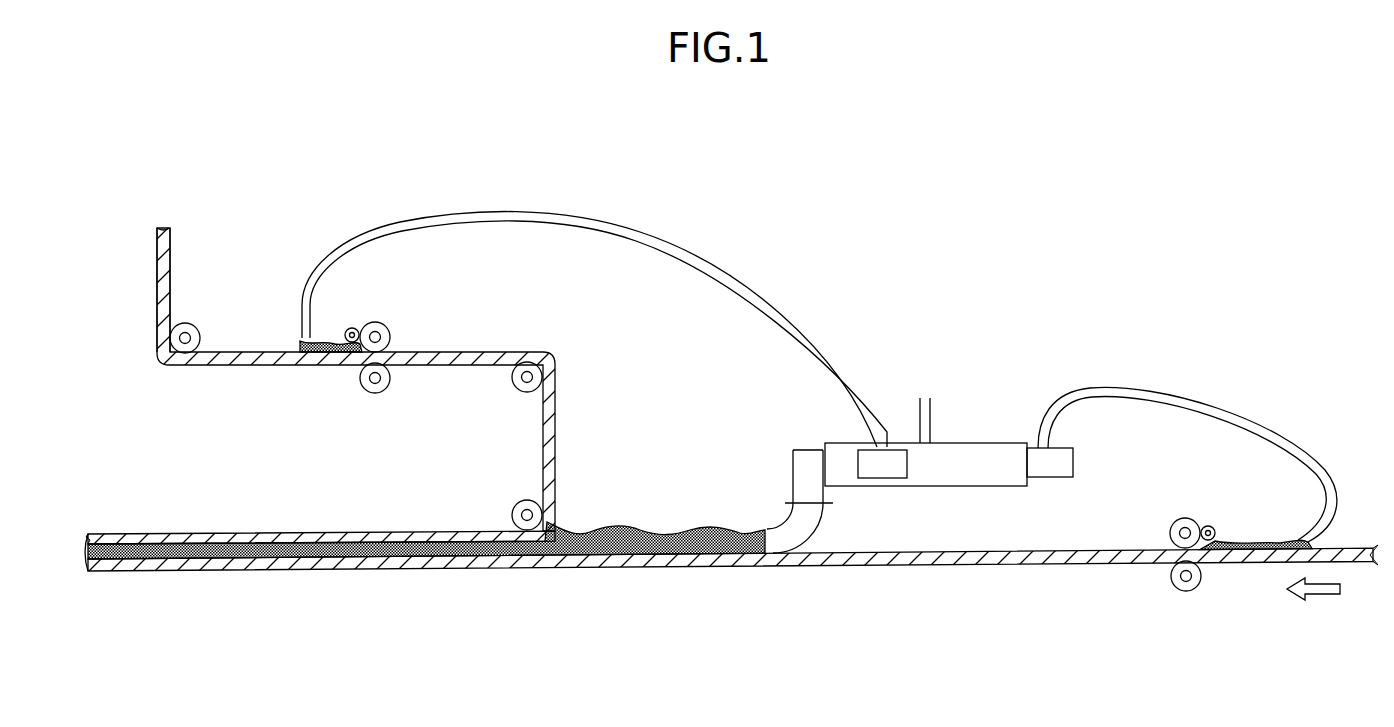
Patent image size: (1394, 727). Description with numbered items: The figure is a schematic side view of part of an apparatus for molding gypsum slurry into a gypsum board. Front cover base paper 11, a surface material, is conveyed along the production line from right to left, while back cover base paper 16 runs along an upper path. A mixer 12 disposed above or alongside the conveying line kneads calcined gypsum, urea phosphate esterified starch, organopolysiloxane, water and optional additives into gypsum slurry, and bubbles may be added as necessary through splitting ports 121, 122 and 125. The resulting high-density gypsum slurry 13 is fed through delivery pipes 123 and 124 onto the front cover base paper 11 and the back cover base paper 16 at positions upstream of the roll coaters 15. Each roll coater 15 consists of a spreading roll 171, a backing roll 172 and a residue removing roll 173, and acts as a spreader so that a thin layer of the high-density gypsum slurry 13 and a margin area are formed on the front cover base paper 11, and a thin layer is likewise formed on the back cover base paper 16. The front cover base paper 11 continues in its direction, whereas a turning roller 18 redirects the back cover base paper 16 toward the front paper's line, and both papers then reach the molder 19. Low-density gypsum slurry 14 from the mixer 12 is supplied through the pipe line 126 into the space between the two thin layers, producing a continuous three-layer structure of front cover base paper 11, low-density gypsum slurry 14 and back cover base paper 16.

The front cover base paper 11 is at (1342, 548).
The mixer 12 is at (962, 443).
The splitting port 121 is at (893, 457).
The splitting port 122 is at (1033, 455).
The delivery pipe 123 is at (668, 236).
The delivery pipe 124 is at (1205, 400).
The splitting port 125 is at (802, 462).
The pipe line 126 is at (787, 521).
The high-density gypsum slurry 13 is at (308, 365).
The low-density gypsum slurry 14 is at (745, 528).
The roll coater 15 is at (357, 387).
The back cover base paper 16 is at (171, 250).
The spreading roll 171 is at (392, 335).
The backing roll 172 is at (385, 393).
The residue removing roll 173 is at (355, 329).
The turning roller 18 is at (515, 392).
The molder 19 is at (512, 514).